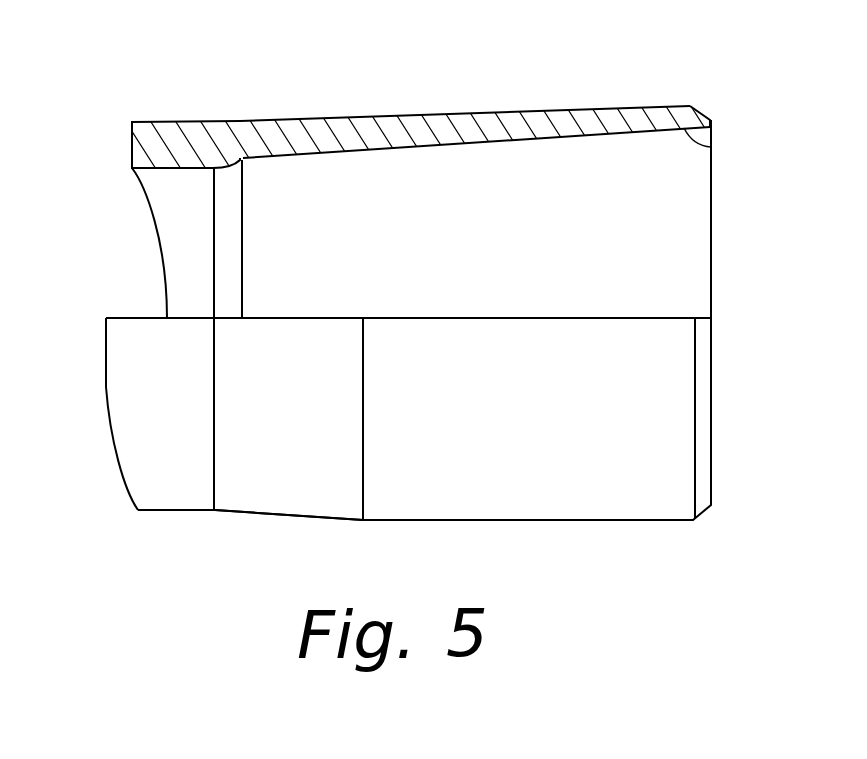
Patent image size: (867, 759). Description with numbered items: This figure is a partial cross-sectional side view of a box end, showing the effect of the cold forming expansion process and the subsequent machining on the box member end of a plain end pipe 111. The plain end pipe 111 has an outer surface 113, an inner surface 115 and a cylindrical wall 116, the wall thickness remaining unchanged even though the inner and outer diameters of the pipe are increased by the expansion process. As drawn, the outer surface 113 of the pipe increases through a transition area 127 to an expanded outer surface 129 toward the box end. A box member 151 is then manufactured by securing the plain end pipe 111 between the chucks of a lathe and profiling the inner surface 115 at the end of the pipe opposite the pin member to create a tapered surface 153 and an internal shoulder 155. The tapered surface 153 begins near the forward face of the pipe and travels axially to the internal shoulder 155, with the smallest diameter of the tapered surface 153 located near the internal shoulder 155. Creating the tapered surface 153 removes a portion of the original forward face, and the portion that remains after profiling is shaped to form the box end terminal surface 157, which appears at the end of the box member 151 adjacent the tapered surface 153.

The plain end pipe 111 is at (108, 385).
The outer surface 113 is at (170, 512).
The inner surface 115 is at (173, 170).
The cylindrical wall 116 is at (140, 142).
The transition area 127 is at (302, 515).
The expanded outer surface 129 is at (550, 520).
The box member 151 is at (650, 72).
The tapered surface 153 is at (711, 148).
The internal shoulder 155 is at (241, 160).
The box end terminal surface 157 is at (711, 118).